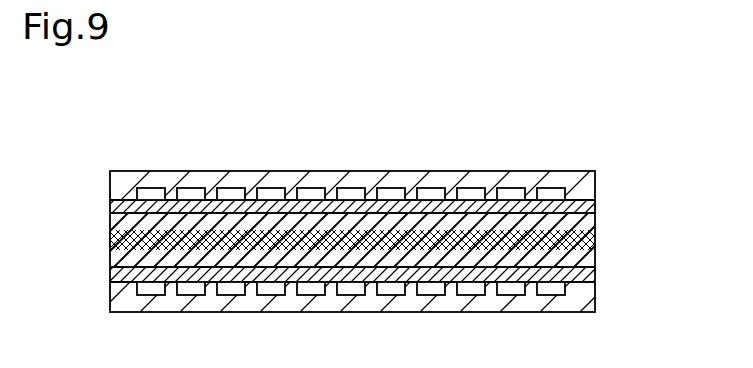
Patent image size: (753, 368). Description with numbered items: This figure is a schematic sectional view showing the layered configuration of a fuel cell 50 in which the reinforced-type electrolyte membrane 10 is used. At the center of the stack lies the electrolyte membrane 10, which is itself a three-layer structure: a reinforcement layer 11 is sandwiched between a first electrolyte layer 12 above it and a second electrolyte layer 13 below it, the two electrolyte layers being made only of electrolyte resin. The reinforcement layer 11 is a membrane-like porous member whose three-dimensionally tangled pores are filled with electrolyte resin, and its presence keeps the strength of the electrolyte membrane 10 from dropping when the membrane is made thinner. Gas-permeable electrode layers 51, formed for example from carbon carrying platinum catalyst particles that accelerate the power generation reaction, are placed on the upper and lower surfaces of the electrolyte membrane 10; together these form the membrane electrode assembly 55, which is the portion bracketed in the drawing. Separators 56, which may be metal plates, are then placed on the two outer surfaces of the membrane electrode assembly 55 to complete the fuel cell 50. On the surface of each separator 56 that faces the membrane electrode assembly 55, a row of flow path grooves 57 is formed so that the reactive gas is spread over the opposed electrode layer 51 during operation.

The electrolyte membrane 10 is at (668, 176).
The reinforcement layer 11 is at (597, 248).
The first electrolyte layer 12 is at (597, 215).
The second electrolyte layer 13 is at (589, 262).
The fuel cell 50 is at (119, 127).
The electrode layer 51 is at (597, 202).
The membrane electrode assembly 55 is at (110, 203).
The separator 56 is at (113, 186).
The flow path groove 57 is at (238, 193).